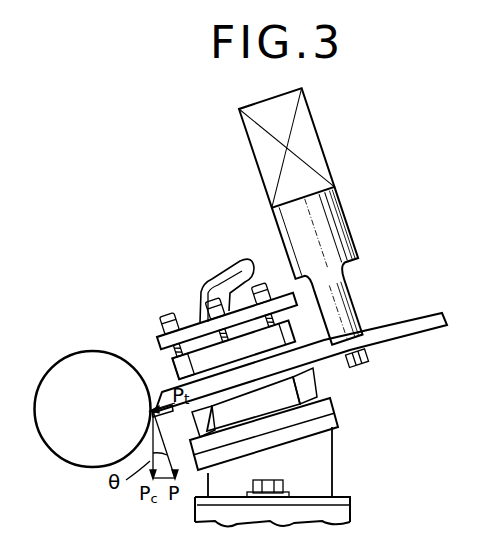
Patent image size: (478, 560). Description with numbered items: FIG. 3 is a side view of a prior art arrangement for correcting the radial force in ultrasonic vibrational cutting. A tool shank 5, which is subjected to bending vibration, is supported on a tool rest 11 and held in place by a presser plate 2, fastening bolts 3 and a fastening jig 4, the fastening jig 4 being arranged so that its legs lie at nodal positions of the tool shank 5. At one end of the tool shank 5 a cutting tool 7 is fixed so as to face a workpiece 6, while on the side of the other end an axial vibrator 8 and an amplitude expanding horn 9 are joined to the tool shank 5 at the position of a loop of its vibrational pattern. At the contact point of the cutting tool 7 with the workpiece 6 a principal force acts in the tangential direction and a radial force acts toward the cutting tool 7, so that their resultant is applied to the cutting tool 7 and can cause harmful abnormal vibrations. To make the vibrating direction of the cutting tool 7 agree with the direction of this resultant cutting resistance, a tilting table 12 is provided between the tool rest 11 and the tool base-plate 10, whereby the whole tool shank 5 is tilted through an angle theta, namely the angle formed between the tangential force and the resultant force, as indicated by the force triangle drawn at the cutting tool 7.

The presser plate 2 is at (203, 350).
The fastening bolts 3 is at (167, 312).
The fastening jig 4 is at (180, 365).
The tool shank 5 is at (317, 360).
The workpiece 6 is at (85, 360).
The cutting tool 7 is at (153, 407).
The axial vibrator 8 is at (311, 142).
The amplitude expanding horn 9 is at (330, 223).
The tool base-plate 10 is at (347, 515).
The tool rest 11 is at (323, 408).
The tilting table 12 is at (323, 470).